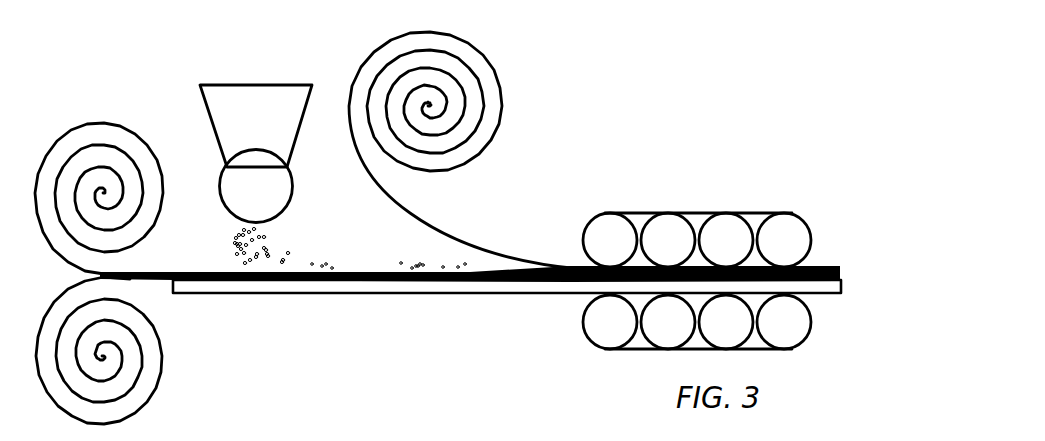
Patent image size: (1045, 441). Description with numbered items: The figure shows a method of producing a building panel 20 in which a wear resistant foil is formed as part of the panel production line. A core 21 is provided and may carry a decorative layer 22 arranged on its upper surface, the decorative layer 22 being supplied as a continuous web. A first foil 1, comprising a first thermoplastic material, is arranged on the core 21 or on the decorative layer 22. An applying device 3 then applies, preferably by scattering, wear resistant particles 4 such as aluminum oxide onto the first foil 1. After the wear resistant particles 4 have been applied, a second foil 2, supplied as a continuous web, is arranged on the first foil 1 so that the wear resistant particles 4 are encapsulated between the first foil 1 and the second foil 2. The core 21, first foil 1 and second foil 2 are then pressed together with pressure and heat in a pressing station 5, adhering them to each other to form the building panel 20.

The first foil 1 is at (203, 268).
The second foil 2 is at (462, 243).
The applying device 3 is at (192, 85).
The wear resistant particles 4 is at (296, 253).
The pressing station 5 is at (712, 207).
The building panel 20 is at (834, 256).
The core 21 is at (510, 286).
The decorative layer 22 is at (135, 279).